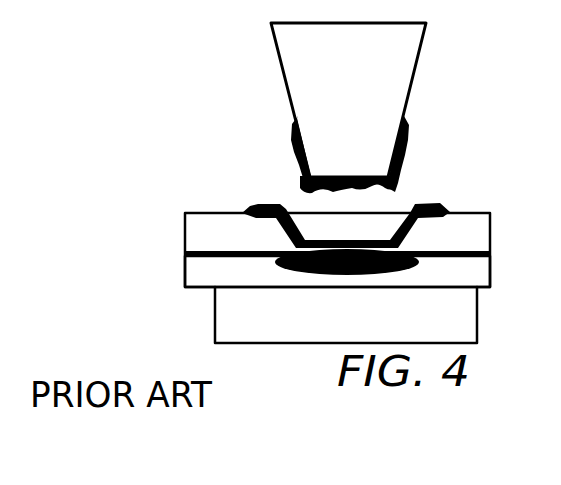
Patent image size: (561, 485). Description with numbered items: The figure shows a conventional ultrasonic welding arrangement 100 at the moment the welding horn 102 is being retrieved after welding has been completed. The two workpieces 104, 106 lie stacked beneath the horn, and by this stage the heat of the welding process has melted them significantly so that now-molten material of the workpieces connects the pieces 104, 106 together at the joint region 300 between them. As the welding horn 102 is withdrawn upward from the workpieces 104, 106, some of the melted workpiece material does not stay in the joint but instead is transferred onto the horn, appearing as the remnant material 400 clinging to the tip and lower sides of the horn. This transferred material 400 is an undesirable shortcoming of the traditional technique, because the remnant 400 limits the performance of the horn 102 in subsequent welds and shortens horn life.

The ultrasonic welding arrangement 100 is at (197, 23).
The welding horn 102 is at (415, 65).
The workpiece 104 is at (185, 213).
The workpiece 106 is at (185, 263).
The solder / conductive material 300 is at (300, 267).
The transferred material 400 is at (302, 189).